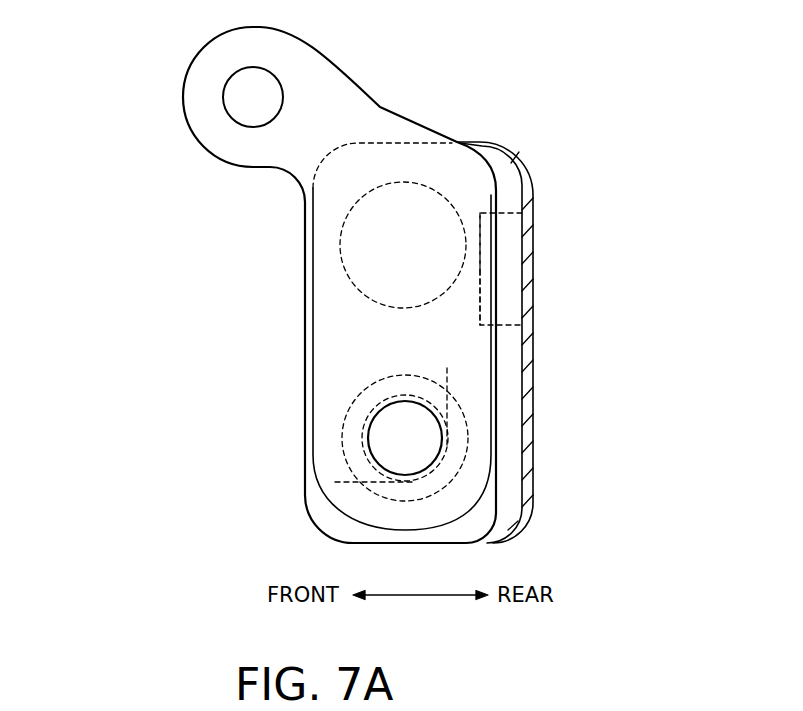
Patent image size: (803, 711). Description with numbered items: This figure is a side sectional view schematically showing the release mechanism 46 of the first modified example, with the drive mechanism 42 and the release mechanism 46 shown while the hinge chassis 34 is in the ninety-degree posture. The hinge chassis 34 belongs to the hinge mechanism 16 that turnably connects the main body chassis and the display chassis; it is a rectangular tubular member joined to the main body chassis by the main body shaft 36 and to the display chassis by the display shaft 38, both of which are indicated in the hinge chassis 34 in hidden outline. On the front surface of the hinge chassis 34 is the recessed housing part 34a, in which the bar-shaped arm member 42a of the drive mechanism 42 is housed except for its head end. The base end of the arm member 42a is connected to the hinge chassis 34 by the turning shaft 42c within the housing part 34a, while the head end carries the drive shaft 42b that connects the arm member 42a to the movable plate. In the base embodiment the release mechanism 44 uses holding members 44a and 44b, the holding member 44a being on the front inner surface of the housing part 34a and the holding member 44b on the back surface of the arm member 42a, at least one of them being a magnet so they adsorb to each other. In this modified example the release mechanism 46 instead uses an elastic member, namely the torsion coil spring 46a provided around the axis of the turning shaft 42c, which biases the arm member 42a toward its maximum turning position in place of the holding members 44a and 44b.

The hinge mechanism 16 is at (537, 135).
The hinge chassis 34 is at (540, 342).
The housing part 34a is at (510, 432).
The main body shaft 36 is at (437, 495).
The display shaft 38 is at (398, 182).
The drive mechanism 42 is at (273, 285).
The arm member 42a is at (348, 342).
The drive shaft 42b is at (250, 103).
The turning shaft 42c is at (392, 442).
The release mechanism 44 is at (581, 269).
The holding member 44a is at (507, 236).
The holding member 44b is at (550, 297).
The release mechanism 46 is at (512, 432).
The torsion coil spring 46a is at (456, 474).